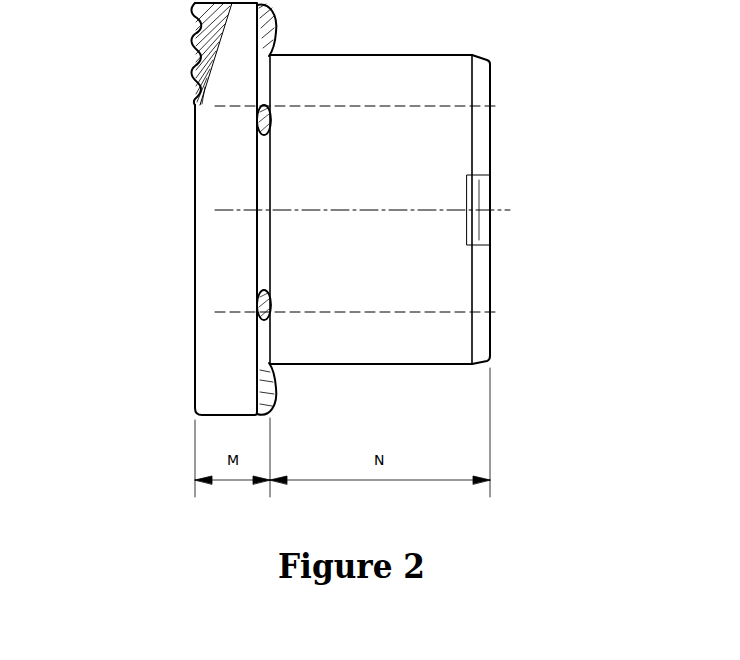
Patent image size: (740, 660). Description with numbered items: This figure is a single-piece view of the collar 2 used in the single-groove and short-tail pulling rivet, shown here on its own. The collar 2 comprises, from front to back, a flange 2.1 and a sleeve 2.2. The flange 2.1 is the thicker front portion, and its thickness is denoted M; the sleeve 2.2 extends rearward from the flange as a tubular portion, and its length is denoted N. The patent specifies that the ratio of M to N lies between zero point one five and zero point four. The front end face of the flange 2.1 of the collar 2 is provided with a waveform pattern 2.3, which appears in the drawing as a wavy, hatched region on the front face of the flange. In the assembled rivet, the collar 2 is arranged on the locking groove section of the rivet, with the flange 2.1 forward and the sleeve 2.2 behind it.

The collar 2 is at (356, 209).
The flange 2.1 is at (203, 280).
The sleeve 2.2 is at (417, 255).
The waveform pattern 2.3 is at (196, 12).